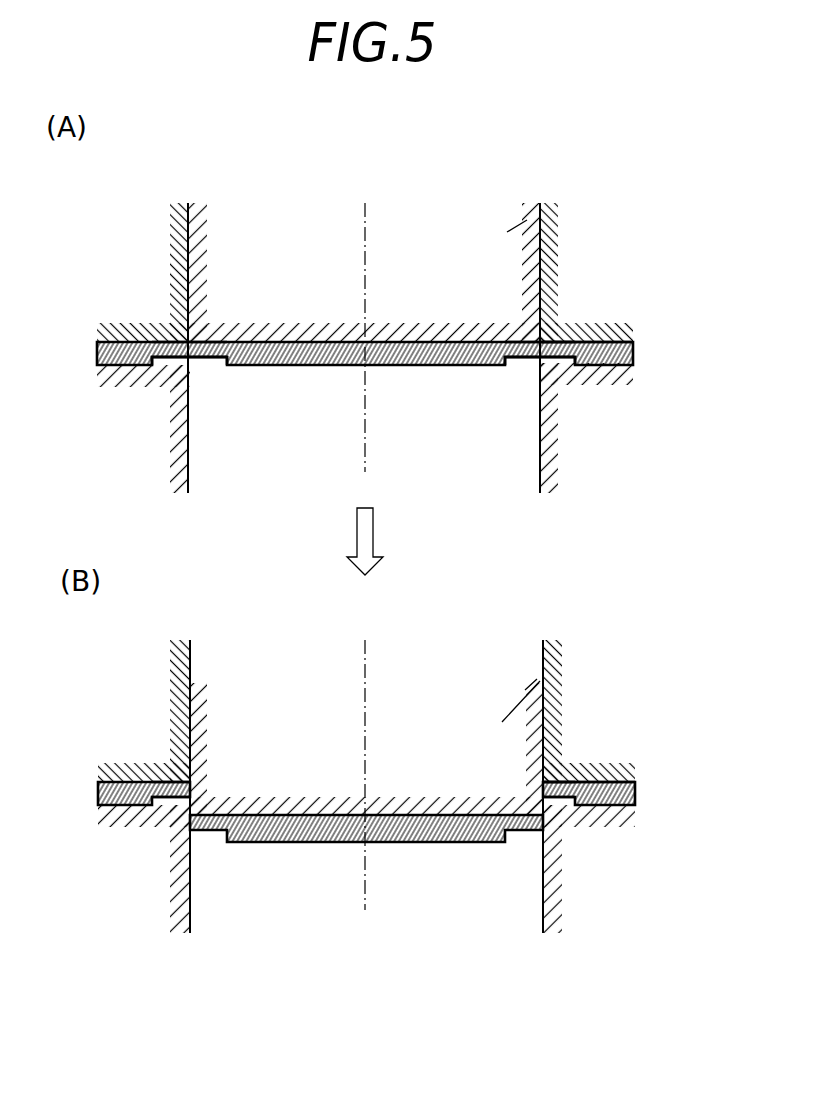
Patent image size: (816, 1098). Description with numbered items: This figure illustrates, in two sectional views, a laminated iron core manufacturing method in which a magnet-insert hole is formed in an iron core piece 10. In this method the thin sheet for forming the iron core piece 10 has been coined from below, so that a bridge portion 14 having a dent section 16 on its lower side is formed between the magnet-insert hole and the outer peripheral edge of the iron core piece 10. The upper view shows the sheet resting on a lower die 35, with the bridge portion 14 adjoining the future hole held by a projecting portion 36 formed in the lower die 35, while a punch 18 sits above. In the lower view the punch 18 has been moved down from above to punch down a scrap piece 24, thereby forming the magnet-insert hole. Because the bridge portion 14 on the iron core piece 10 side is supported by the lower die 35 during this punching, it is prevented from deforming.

The iron core piece 10 is at (633, 348).
The bridge portion 14 is at (166, 347).
The dent section 16 is at (208, 363).
The punch 18 is at (553, 208).
The scrap piece 24 is at (322, 842).
The lower die 35 is at (550, 467).
The projecting portion 36 is at (565, 343).